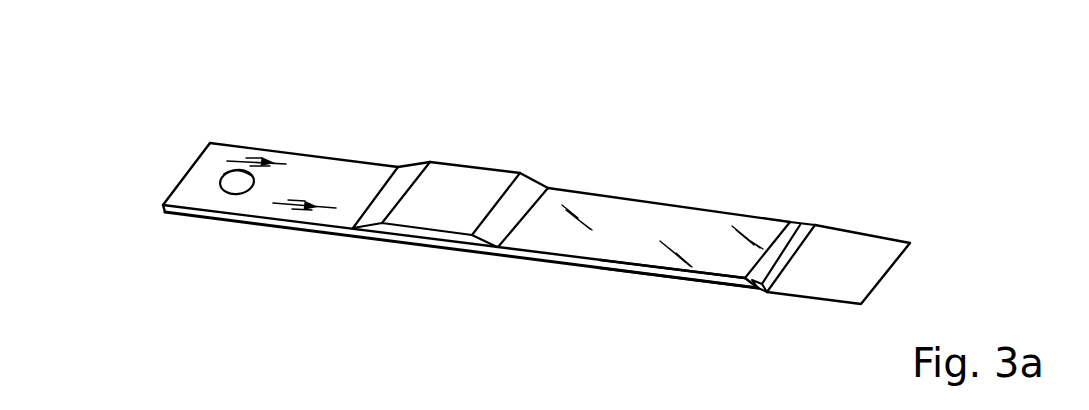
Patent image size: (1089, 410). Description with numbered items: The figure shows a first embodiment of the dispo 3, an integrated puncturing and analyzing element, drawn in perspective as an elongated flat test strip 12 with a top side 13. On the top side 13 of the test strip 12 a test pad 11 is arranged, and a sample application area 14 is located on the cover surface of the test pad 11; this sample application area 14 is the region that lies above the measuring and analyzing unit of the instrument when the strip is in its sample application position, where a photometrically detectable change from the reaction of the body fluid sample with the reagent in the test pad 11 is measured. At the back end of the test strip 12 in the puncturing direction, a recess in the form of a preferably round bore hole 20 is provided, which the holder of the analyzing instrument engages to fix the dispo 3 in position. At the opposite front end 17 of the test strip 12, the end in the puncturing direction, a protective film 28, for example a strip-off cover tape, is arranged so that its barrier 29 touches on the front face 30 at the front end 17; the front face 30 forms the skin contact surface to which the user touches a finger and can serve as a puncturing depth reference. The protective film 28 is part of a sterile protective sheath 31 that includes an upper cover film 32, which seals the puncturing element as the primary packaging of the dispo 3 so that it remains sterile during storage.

The dispo 3 is at (410, 100).
The test pad 11 is at (508, 157).
The test strip 12 is at (292, 212).
The top side 13 is at (360, 172).
The sample application area 14 is at (465, 178).
The front end 17 is at (732, 294).
The bore hole 20 is at (242, 180).
The protective film 28 is at (852, 247).
The barrier 29 is at (797, 223).
The front face 30 is at (750, 293).
The sterile protective sheath 31 is at (751, 195).
The upper cover film 32 is at (662, 215).